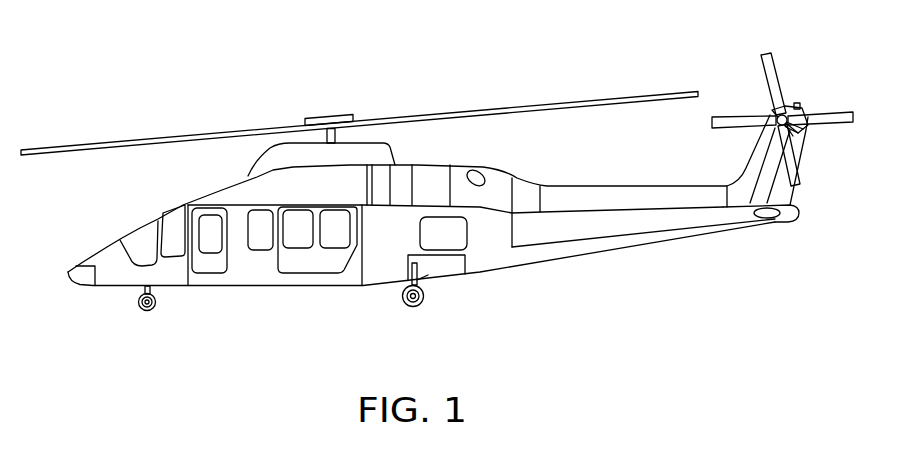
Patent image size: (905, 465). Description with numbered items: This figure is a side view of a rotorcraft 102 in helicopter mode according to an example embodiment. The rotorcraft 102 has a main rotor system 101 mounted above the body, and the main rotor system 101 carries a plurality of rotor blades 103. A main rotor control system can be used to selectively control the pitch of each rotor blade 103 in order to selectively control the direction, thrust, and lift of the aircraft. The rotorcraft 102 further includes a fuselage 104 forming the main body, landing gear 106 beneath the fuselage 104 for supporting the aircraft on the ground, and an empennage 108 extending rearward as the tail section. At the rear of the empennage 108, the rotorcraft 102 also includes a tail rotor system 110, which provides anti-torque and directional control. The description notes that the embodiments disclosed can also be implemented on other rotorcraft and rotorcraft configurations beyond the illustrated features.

The main rotor system 101 is at (343, 100).
The rotorcraft 102 is at (227, 67).
The rotor blades 103 is at (165, 137).
The fuselage 104 is at (263, 287).
The landing gear 106 is at (413, 306).
The empennage 108 is at (650, 243).
The tail rotor system 110 is at (803, 92).